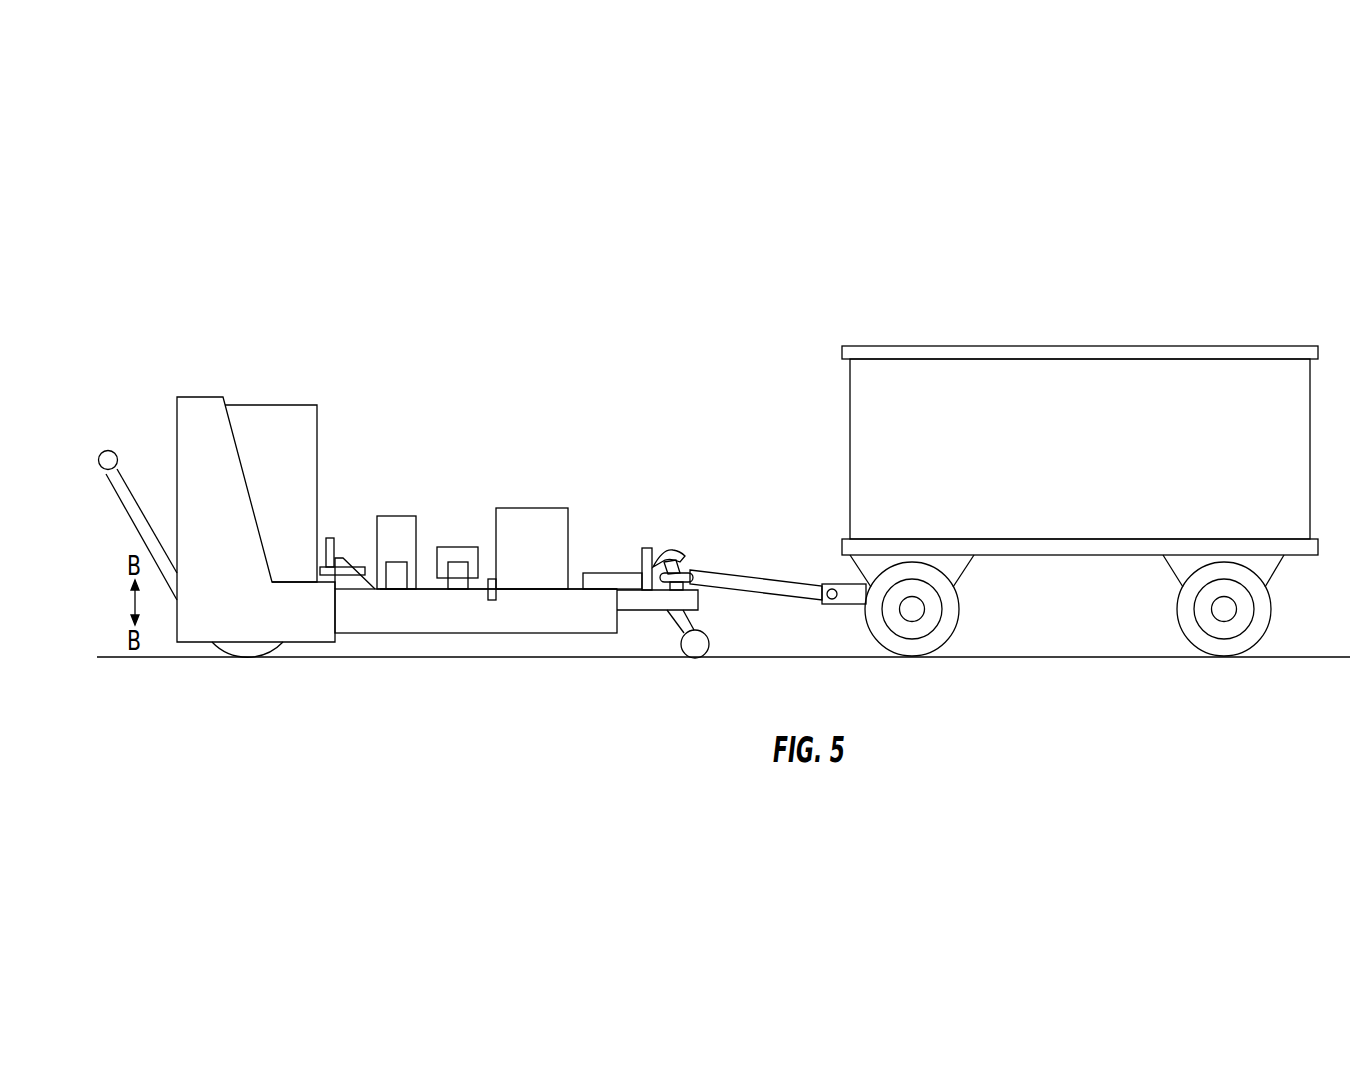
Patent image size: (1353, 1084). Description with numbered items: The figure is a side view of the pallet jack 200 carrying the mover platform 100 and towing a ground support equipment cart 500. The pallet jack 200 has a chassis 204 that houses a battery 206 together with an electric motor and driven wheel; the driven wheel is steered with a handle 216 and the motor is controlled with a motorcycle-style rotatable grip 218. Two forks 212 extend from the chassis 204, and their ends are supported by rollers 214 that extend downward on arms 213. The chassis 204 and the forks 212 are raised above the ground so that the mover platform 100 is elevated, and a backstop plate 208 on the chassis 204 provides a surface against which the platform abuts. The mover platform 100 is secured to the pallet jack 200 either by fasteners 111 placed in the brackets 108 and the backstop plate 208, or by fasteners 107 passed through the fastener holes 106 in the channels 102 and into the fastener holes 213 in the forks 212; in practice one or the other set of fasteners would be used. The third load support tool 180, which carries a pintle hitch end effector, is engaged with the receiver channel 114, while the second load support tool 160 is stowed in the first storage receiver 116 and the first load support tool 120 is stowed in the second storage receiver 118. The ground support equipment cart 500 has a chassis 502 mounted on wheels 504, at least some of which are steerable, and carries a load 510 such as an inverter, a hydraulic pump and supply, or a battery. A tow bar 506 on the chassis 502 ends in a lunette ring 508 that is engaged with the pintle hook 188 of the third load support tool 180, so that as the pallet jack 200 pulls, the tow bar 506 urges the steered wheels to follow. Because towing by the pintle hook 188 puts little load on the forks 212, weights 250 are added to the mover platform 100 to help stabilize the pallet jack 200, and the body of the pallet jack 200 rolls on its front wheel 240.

The mover platform 100 is at (476, 536).
The channels 102 is at (403, 625).
The fastener holes 106 is at (498, 589).
The fasteners 107 is at (493, 579).
The brackets 108 is at (348, 585).
The fasteners 111 is at (357, 587).
The receiver channel 114 is at (598, 577).
The first storage receiver 116 is at (461, 583).
The second storage receiver 118 is at (398, 583).
The first load support tool 120 is at (414, 538).
The second load support tool 160 is at (451, 537).
The third load support tool 180 is at (672, 527).
The pintle hook 188 is at (706, 531).
The pallet jack 200 is at (246, 472).
The chassis 204 is at (250, 612).
The battery 206 is at (297, 420).
The backstop plate 208 is at (331, 538).
The forks 212 is at (690, 602).
The arms 213 is at (673, 625).
The rollers 214 is at (695, 650).
The handle 216 is at (124, 492).
The rotatable grip 218 is at (108, 450).
The front wheel 240 is at (250, 648).
The weights 250 is at (540, 523).
The ground support equipment cart 500 is at (1080, 476).
The chassis 502 is at (1104, 554).
The wheels 504 is at (925, 645).
The tow bar 506 is at (802, 585).
The lunette ring 508 is at (675, 575).
The load 510 is at (1130, 393).